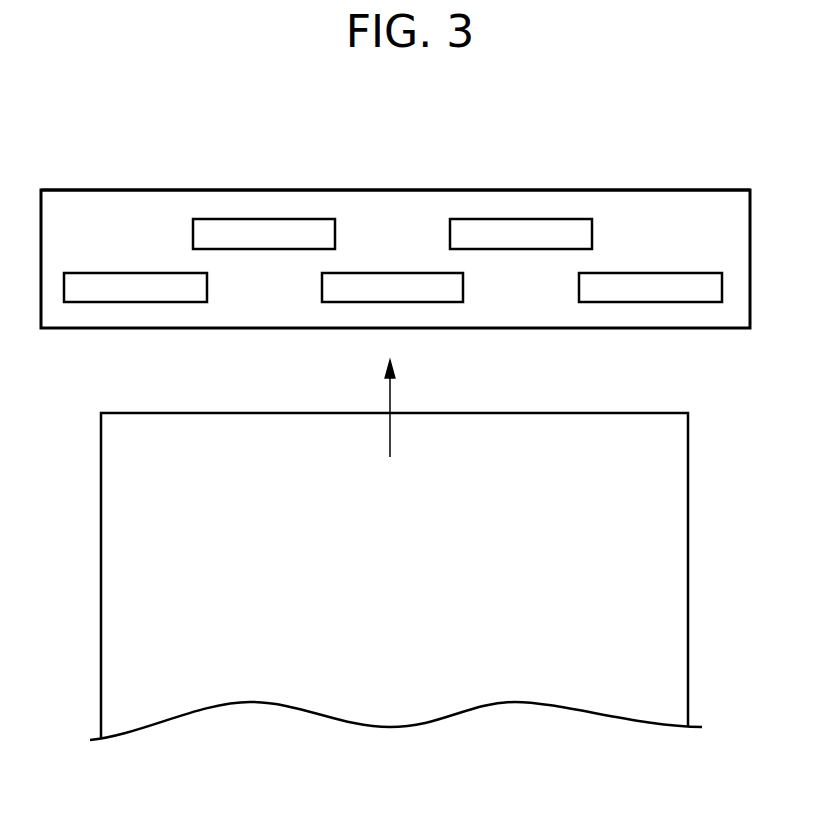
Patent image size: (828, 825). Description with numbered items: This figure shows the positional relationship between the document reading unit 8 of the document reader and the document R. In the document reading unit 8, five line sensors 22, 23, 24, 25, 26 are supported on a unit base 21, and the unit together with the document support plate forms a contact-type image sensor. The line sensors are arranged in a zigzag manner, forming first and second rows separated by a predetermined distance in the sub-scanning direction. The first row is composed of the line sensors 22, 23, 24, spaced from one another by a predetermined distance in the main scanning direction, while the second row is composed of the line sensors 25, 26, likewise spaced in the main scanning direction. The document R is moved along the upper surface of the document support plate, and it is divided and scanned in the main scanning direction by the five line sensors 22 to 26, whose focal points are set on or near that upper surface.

The document reading unit 8 is at (385, 187).
The unit base 21 is at (124, 205).
The line sensor CIS22 22 is at (124, 284).
The line sensor CIS23 23 is at (429, 290).
The line sensor CIS24 24 is at (646, 283).
The line sensor CIS25 25 is at (244, 228).
The line sensor CIS26 26 is at (513, 227).
The document R is at (216, 433).